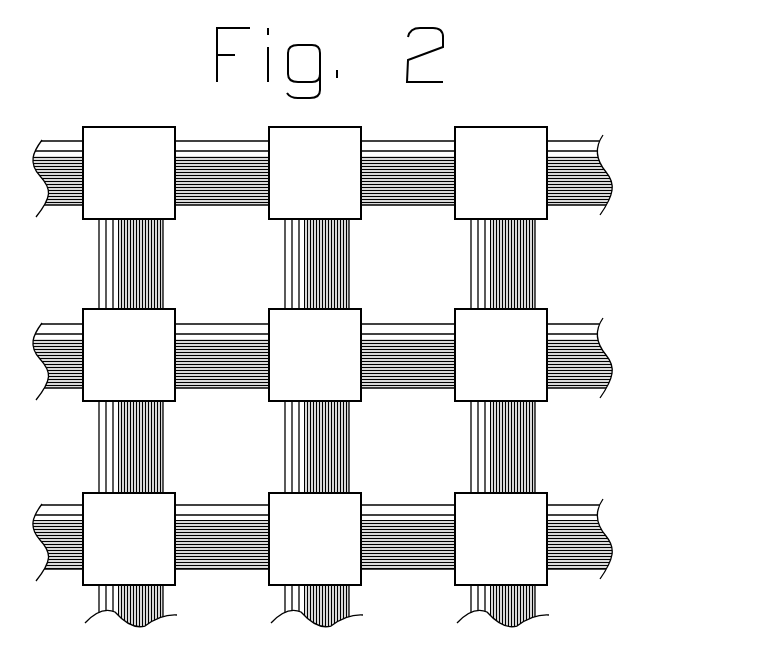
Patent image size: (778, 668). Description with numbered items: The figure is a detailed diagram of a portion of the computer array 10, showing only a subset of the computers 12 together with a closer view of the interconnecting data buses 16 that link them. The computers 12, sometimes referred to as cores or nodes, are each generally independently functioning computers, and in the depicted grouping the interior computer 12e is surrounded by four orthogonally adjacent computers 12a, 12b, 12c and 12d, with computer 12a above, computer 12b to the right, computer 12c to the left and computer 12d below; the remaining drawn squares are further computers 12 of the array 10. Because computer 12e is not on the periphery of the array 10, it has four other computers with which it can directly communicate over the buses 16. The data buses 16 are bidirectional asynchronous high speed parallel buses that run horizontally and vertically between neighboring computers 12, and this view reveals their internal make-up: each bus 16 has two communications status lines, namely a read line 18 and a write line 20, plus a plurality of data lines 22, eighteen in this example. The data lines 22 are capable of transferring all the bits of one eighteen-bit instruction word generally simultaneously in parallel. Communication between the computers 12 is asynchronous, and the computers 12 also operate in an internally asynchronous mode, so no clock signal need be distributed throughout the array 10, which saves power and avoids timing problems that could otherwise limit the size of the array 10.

The computer array 10 is at (645, 241).
The computers 12 is at (150, 189).
The computer 12a is at (344, 189).
The computer 12b is at (530, 371).
The computer 12c is at (158, 371).
The computer 12d is at (344, 555).
The computer 12e is at (344, 371).
The interconnecting data buses 16 is at (430, 207).
The read line 18 is at (231, 325).
The write line 20 is at (196, 326).
The data lines 22 is at (410, 357).